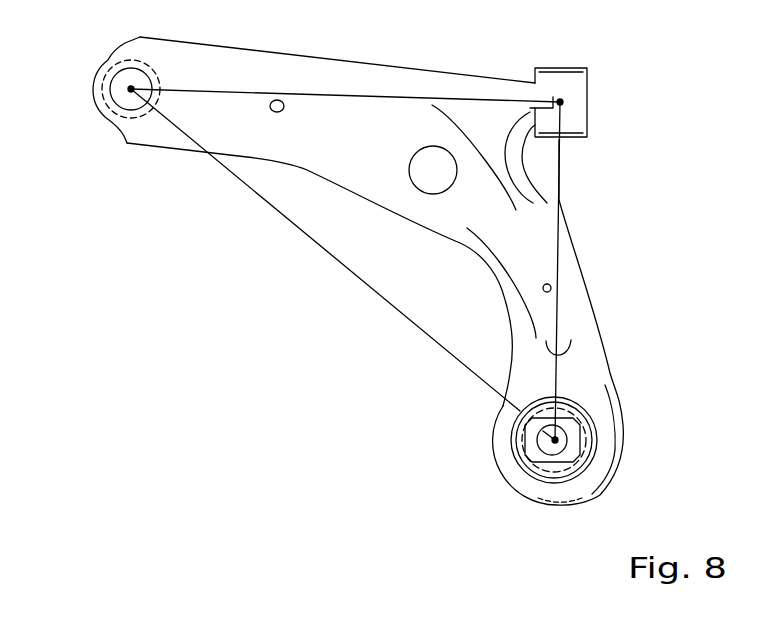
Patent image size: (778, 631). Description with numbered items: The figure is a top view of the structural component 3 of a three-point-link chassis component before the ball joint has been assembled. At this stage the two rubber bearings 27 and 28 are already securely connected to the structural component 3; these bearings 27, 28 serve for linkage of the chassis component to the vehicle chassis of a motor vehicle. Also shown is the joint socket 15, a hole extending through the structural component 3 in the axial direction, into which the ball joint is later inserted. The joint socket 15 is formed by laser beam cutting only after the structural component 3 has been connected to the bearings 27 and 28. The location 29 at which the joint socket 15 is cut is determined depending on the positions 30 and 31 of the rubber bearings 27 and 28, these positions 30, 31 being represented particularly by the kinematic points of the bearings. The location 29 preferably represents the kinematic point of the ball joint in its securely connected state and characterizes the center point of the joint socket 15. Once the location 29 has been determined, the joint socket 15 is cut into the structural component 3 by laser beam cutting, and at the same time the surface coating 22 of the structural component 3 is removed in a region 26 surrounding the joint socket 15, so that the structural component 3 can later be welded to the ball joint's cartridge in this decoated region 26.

The structural component 3 is at (420, 74).
The joint socket 15 is at (120, 72).
The surface coating 22 is at (208, 53).
The region surrounding the joint socket 26 is at (121, 74).
The rubber bearing 27 is at (527, 435).
The rubber bearing 28 is at (587, 82).
The location 29 is at (116, 100).
The position 30 is at (556, 440).
The position 31 is at (560, 102).